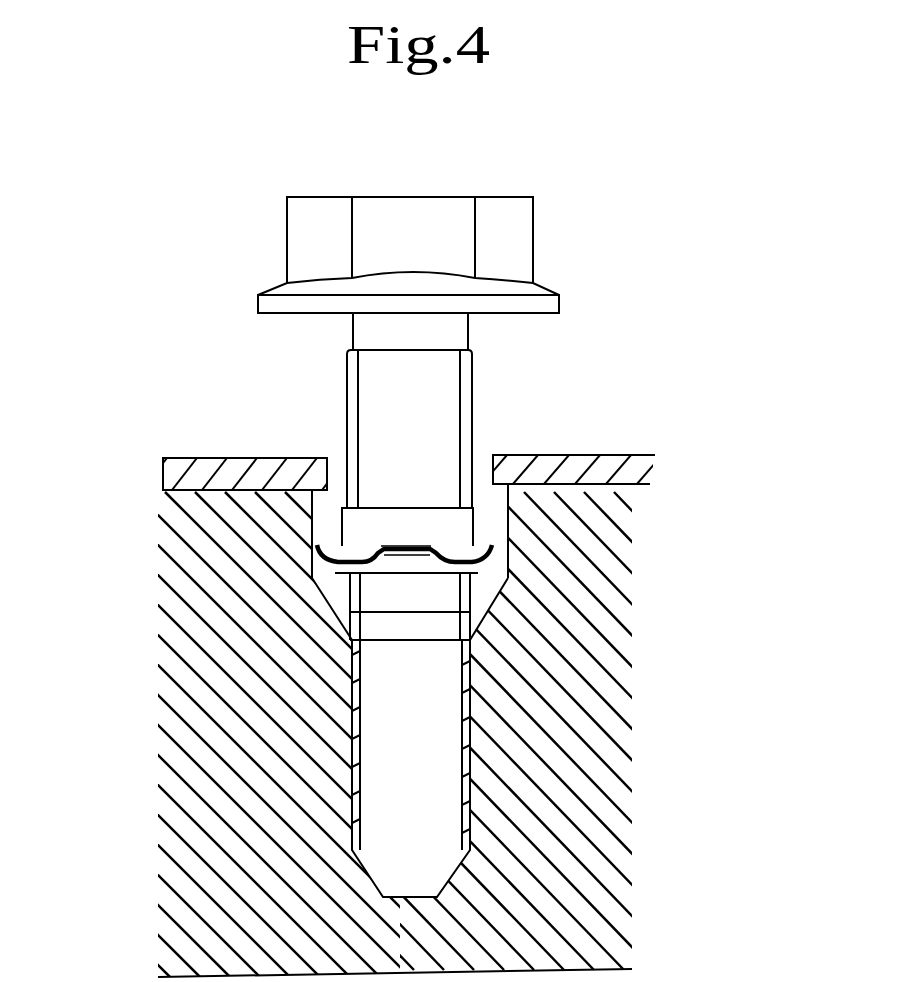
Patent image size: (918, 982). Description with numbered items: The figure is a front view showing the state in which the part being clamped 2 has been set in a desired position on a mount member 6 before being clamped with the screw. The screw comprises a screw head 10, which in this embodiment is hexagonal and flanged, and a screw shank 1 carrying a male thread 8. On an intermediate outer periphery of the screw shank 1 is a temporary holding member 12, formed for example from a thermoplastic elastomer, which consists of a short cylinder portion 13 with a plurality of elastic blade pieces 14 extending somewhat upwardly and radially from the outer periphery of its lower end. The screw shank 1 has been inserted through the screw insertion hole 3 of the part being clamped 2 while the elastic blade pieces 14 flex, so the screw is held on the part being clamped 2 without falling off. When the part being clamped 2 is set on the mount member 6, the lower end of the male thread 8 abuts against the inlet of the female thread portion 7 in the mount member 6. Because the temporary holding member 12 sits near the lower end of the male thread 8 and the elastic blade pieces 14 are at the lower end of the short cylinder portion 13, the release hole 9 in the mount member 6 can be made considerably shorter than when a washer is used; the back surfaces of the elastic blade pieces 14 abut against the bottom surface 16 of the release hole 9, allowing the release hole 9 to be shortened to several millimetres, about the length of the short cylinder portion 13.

The screw shank 1 is at (397, 426).
The part being clamped 2 is at (602, 456).
The screw insertion hole 3 is at (487, 453).
The mount member 6 is at (562, 785).
The female thread portion 7 is at (365, 802).
The male thread 8 is at (474, 390).
The release hole 9 is at (495, 505).
The screw head 10 is at (308, 228).
The temporary holding member 12 is at (505, 538).
The short cylinder portion 13 is at (367, 538).
The elastic blade pieces 14 is at (345, 580).
The bottom surface 16 is at (485, 578).